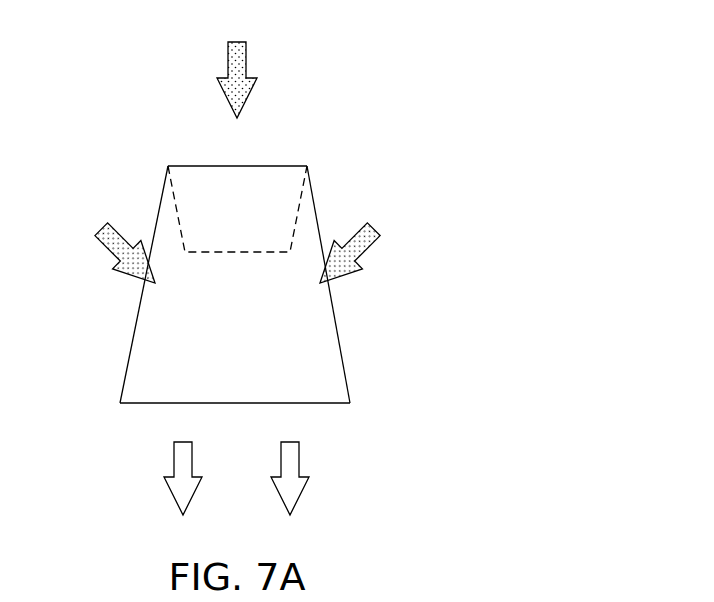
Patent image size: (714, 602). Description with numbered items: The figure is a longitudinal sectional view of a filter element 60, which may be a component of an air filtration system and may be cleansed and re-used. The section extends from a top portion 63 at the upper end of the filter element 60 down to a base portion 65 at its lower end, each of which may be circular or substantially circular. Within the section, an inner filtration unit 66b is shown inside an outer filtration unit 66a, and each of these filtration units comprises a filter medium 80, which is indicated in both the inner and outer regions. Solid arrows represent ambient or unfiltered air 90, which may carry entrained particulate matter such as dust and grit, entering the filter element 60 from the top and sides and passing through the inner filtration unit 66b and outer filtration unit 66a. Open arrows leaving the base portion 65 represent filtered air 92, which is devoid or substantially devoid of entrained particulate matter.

The filter element 60 is at (282, 262).
The top portion 63 is at (178, 166).
The base portion 65 is at (140, 404).
The outer filtration unit 66a is at (340, 322).
The inner filtration unit 66b is at (223, 252).
The filter medium 80 is at (222, 221).
The ambient or unfiltered air 90 is at (247, 63).
The filtered air 92 is at (193, 463).